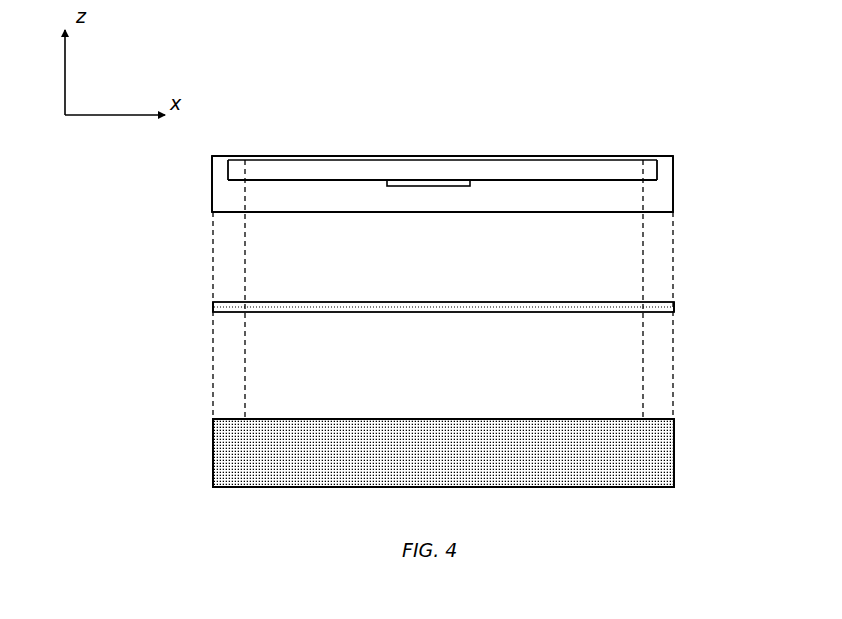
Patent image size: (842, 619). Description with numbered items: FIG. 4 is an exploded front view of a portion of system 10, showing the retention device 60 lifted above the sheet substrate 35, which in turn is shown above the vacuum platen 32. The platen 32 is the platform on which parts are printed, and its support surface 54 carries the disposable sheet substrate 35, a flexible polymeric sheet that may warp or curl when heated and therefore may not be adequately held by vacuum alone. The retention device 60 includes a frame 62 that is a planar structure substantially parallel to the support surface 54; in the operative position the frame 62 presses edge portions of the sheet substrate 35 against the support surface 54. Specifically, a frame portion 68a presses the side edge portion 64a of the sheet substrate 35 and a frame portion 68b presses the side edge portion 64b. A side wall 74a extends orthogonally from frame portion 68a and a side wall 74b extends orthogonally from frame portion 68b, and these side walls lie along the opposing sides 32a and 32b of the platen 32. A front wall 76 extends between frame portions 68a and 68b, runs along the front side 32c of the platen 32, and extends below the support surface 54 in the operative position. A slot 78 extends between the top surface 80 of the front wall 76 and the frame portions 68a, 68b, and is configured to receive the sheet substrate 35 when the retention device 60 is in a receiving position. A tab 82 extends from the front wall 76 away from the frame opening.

The system 10 is at (663, 60).
The vacuum platen 32 is at (495, 425).
The side of platen 32a is at (213, 452).
The side of platen 32b is at (676, 452).
The front side of platen 32c is at (268, 478).
The sheet substrate 35 is at (340, 302).
The support surface 54 is at (336, 412).
The retention device 60 is at (323, 197).
The frame 62 is at (650, 150).
The side edge portion 64a is at (232, 302).
The side edge portion 64b is at (658, 302).
The frame portion 68a is at (228, 150).
The frame portion 68b is at (657, 150).
The side wall 74a is at (213, 193).
The side wall 74b is at (674, 190).
The front wall 76 is at (492, 202).
The slot 78 is at (226, 163).
The top surface of front wall 80 is at (528, 172).
The tab 82 is at (430, 186).